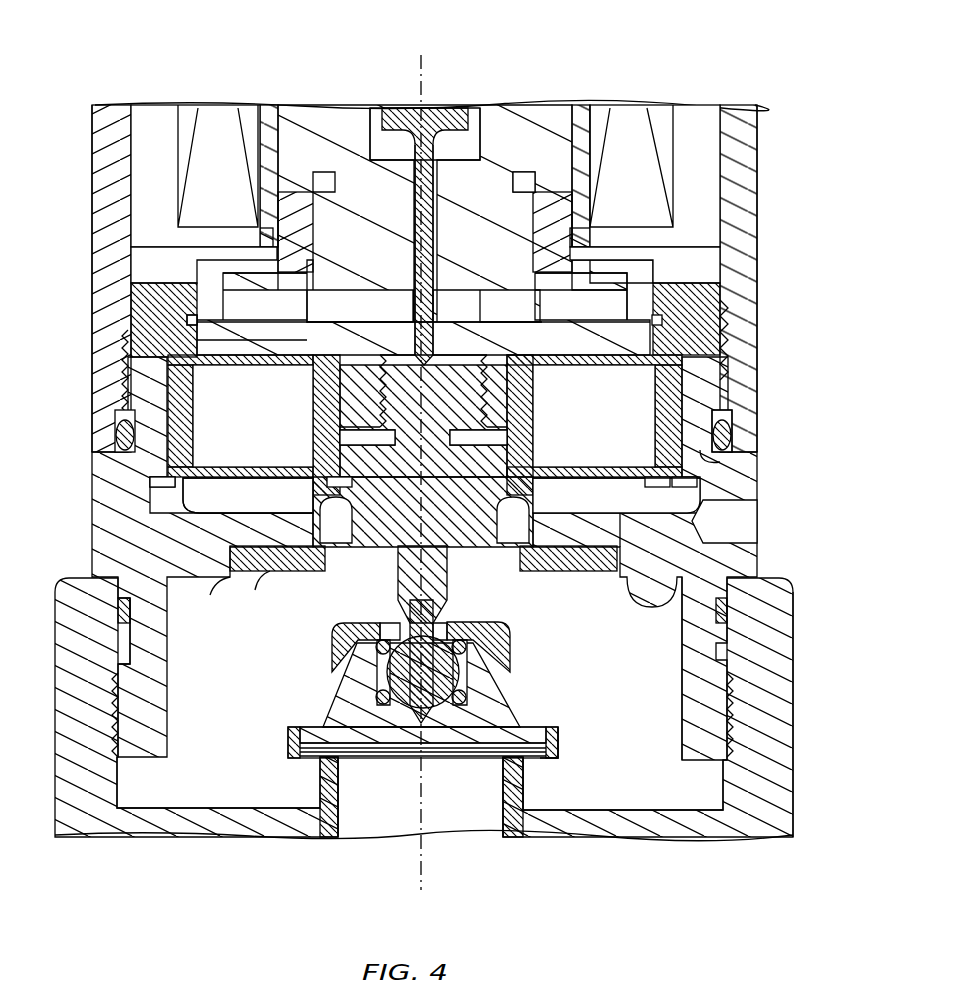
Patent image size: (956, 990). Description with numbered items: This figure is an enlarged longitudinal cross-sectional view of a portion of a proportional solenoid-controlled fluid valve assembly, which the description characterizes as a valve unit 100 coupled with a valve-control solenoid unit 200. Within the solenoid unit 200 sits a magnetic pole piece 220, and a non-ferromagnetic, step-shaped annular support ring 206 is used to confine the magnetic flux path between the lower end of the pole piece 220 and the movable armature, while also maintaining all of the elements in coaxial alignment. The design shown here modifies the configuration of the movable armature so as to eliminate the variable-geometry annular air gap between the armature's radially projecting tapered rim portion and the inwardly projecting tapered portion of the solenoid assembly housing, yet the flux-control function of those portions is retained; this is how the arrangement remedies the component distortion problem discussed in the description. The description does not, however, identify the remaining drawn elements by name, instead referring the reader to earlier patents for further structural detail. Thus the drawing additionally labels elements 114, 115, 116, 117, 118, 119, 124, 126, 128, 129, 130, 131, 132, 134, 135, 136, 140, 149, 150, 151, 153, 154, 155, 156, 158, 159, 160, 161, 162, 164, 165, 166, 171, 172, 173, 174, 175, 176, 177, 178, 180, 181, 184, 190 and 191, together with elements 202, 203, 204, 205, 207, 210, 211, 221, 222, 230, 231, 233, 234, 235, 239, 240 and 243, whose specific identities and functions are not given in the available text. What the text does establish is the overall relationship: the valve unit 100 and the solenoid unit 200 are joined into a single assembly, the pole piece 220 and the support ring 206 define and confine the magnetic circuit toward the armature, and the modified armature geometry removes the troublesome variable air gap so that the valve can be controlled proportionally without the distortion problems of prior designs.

The valve unit 100 is at (803, 648).
The valve cone 114 is at (512, 698).
The ball 115 is at (365, 686).
The valve stem 116 is at (440, 603).
The retainer 117 is at (350, 701).
The valve seat 118 is at (375, 624).
The valve seat 119 is at (512, 647).
The housing wall 124 is at (760, 713).
The bore 126 is at (372, 830).
The pedestal wall 128 is at (340, 797).
The pedestal wall 129 is at (500, 765).
The cavity 130 is at (190, 810).
The chamber 131 is at (630, 723).
The plunger stem 132 is at (396, 556).
The spring seat 134 is at (345, 566).
The spring finger 135 is at (262, 562).
The spring finger 136 is at (215, 574).
The filter plate 140 is at (288, 743).
The end cap 149 is at (540, 760).
The plug 150 is at (758, 549).
The cavity 151 is at (612, 810).
The O-ring 153 is at (122, 610).
The skirt 154 is at (632, 580).
The O-ring 155 is at (745, 583).
The spring seat 156 is at (495, 572).
The body 158 is at (636, 495).
The groove 159 is at (150, 645).
The piston 160 is at (318, 488).
The piston channel 161 is at (530, 497).
The pocket 162 is at (340, 438).
The plunger 164 is at (440, 345).
The plate 165 is at (530, 452).
The channel 166 is at (560, 480).
The plate 171 is at (520, 362).
The sleeve wall 172 is at (533, 425).
The inner sleeve 173 is at (355, 413).
The plate 174 is at (290, 358).
The flange 175 is at (545, 318).
The flange 176 is at (303, 305).
The flange 177 is at (540, 320).
The plate 178 is at (240, 330).
The chamber 180 is at (535, 400).
The flange 181 is at (305, 300).
The sleeve wall 184 is at (190, 438).
The chamber 190 is at (245, 352).
The plate 191 is at (275, 466).
The valve-control solenoid unit 200 is at (760, 228).
The thread 202 is at (725, 345).
The passage 203 is at (720, 459).
The groove 204 is at (730, 413).
The O-ring 205 is at (740, 431).
The step-shaped annular support ring 206 is at (648, 283).
The notch 207 is at (545, 189).
The screw 210 is at (448, 110).
The screw shank 211 is at (415, 335).
The magnetic pole piece 220 is at (300, 140).
The window 221 is at (474, 110).
The flange 222 is at (545, 290).
The outer wall 230 is at (92, 330).
The ring nut 231 is at (135, 333).
The slot 233 is at (197, 280).
The outer wall 234 is at (758, 378).
The tab 235 is at (232, 322).
The tab 239 is at (225, 340).
The coil 240 is at (632, 135).
The channel 243 is at (195, 486).